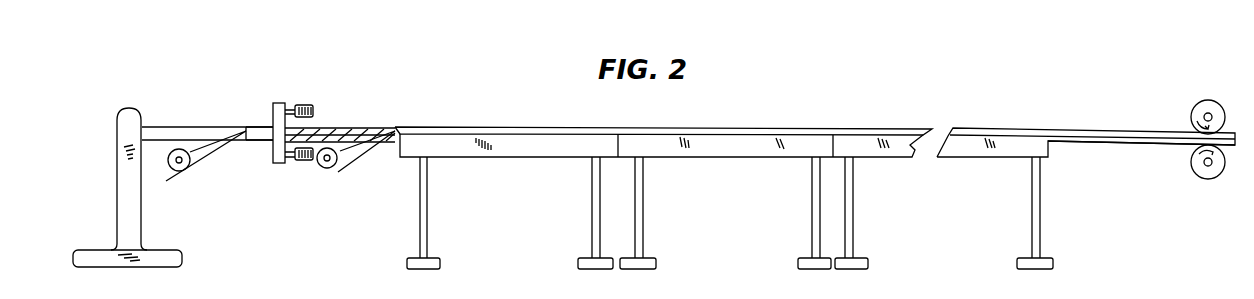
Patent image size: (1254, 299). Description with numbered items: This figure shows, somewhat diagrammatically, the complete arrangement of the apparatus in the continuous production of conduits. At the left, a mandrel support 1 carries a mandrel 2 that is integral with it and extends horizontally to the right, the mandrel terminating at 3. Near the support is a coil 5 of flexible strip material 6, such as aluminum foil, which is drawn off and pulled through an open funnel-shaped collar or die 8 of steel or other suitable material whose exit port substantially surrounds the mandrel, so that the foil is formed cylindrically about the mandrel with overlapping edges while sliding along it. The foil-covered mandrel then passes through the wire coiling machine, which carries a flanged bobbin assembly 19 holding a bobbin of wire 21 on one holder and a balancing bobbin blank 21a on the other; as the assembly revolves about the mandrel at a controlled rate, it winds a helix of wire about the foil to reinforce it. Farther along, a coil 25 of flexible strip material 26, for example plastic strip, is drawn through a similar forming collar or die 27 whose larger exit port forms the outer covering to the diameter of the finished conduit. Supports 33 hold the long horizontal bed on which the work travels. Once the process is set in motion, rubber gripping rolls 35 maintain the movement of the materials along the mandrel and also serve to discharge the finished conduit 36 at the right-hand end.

The mandrel support 1 is at (127, 110).
The mandrel 2 is at (202, 126).
The mandrel termination 3 is at (511, 128).
The coil of flexible strip material 5 is at (176, 172).
The flexible strip material 6 is at (197, 163).
The funnel-shaped collar or die 8 is at (240, 142).
The flanged bobbin assembly 19 is at (281, 102).
The bobbin of wire 21 is at (310, 103).
The balancing bobbin blank 21a is at (306, 162).
The coil of flexible strip material 25 is at (327, 170).
The flexible strip material 26 is at (343, 172).
The forming collar or die 27 is at (383, 143).
The support legs 33 is at (545, 160).
The rubber gripping rolls 35 is at (1192, 110).
The finished conduit 36 is at (1093, 148).